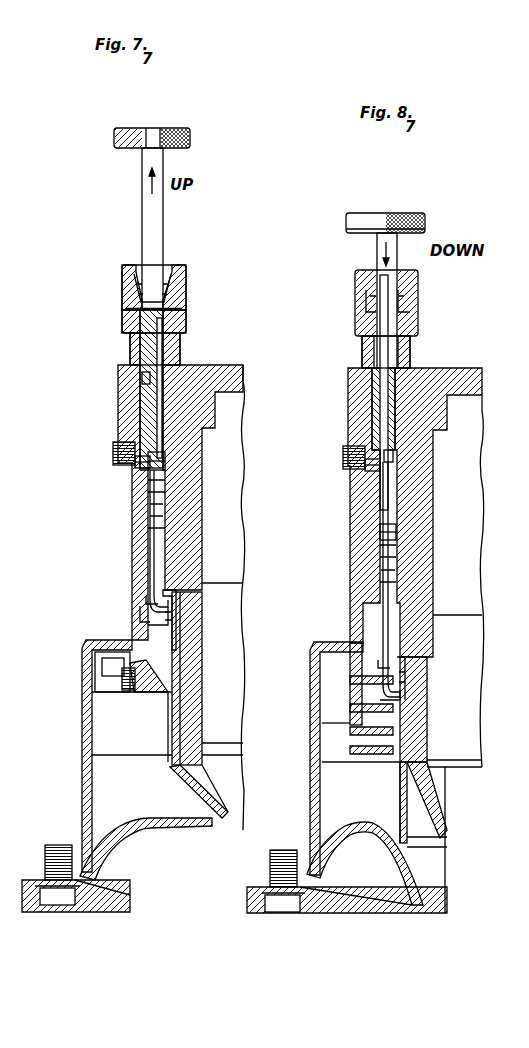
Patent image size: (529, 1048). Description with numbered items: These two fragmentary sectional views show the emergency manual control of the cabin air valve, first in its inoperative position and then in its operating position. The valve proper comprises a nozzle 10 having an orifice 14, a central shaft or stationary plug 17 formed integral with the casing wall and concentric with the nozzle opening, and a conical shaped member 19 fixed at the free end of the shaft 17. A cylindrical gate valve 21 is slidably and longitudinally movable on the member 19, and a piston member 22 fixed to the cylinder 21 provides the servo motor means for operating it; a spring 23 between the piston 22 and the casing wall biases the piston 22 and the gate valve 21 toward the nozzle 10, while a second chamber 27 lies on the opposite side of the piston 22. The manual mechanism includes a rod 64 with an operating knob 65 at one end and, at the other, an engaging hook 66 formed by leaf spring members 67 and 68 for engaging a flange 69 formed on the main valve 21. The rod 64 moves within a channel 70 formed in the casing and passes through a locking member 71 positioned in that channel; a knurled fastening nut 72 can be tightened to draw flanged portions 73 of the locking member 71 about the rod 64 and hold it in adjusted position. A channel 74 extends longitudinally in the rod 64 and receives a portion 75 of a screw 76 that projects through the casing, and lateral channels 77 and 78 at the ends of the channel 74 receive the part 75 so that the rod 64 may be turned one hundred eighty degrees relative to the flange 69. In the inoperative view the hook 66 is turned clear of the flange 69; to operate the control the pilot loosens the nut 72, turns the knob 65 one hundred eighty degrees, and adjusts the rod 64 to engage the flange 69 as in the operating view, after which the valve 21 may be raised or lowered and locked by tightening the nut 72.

In FIG. 7, the nozzle 10 is at (130, 840).
In FIG. 8, the nozzle 10 is at (420, 878).
In FIG. 8, the orifice 14 is at (438, 905).
In FIG. 7, the central shaft or stationary plug 17 is at (198, 715).
In FIG. 8, the central shaft or stationary plug 17 is at (427, 723).
In FIG. 7, the conical shaped member 19 is at (225, 808).
In FIG. 8, the conical shaped member 19 is at (440, 798).
In FIG. 7, the cylindrical gate valve 21 is at (172, 738).
In FIG. 8, the cylindrical gate valve 21 is at (405, 797).
In FIG. 7, the piston member 22 is at (106, 700).
In FIG. 8, the piston member 22 is at (466, 846).
In FIG. 7, the spring 23 is at (127, 670).
In FIG. 8, the spring 23 is at (378, 683).
In FIG. 7, the second chamber 27 is at (105, 738).
In FIG. 8, the second chamber 27 is at (338, 672).
In FIG. 7, the rod 64 is at (158, 233).
In FIG. 8, the rod 64 is at (400, 340).
In FIG. 7, the operating knob 65 is at (191, 143).
In FIG. 8, the operating knob 65 is at (425, 222).
In FIG. 7, the engaging hook 66 is at (143, 612).
In FIG. 7, the leaf spring member 67 is at (143, 597).
In FIG. 8, the leaf spring member 67 is at (400, 670).
In FIG. 7, the leaf spring member 68 is at (140, 624).
In FIG. 8, the leaf spring member 68 is at (402, 698).
In FIG. 7, the flange 69 is at (167, 618).
In FIG. 8, the flange 69 is at (410, 683).
In FIG. 7, the channel 70 is at (148, 547).
In FIG. 8, the channel 70 is at (396, 565).
In FIG. 7, the locking member 71 is at (138, 396).
In FIG. 8, the locking member 71 is at (367, 340).
In FIG. 7, the fastening nut 72 is at (126, 295).
In FIG. 8, the fastening nut 72 is at (420, 298).
In FIG. 7, the flanged portion 73 is at (170, 292).
In FIG. 8, the flanged portion 73 is at (405, 305).
In FIG. 7, the channel 74 is at (160, 417).
In FIG. 8, the channel 74 is at (366, 288).
In FIG. 7, the portion of screw 75 is at (134, 468).
In FIG. 8, the portion of screw 75 is at (368, 472).
In FIG. 7, the screw 76 is at (112, 455).
In FIG. 8, the screw 76 is at (352, 458).
In FIG. 7, the lateral channel 77 is at (145, 378).
In FIG. 8, the lateral channel 77 is at (393, 456).
In FIG. 7, the lateral channel 78 is at (162, 455).
In FIG. 8, the lateral channel 78 is at (396, 532).